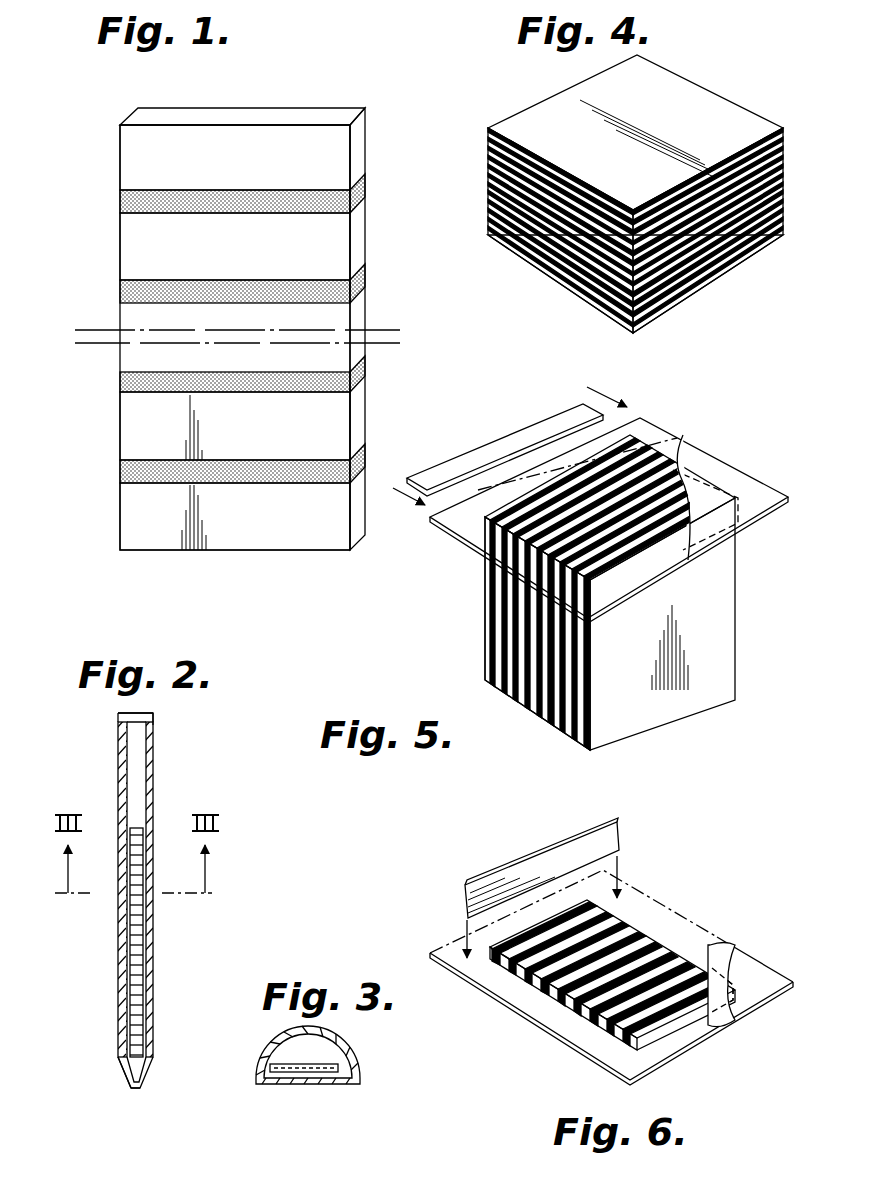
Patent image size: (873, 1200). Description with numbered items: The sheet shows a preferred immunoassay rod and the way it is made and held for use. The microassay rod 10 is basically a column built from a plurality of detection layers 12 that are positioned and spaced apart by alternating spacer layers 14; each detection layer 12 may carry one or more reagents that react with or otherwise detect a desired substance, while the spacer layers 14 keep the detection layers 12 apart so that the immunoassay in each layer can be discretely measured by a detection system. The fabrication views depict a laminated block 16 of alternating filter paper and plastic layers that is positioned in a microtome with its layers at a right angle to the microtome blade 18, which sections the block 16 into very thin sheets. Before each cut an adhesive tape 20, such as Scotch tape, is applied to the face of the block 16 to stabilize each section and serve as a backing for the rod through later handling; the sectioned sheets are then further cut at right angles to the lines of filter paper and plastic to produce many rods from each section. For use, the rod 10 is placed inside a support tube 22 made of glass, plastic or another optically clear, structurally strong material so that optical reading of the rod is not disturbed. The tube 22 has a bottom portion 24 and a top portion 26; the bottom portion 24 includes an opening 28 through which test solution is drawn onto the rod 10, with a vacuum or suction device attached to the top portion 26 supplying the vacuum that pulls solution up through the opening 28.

In FIG. 1, the microassay rod 10 is at (294, 104).
In FIG. 2, the microassay rod 10 is at (137, 825).
In FIG. 3, the microassay rod 10 is at (306, 1062).
In FIG. 6, the microassay rod 10 is at (612, 975).
In FIG. 4, the detection layers 12 is at (735, 232).
In FIG. 5, the detection layers 12 is at (582, 735).
In FIG. 4, the spacer layers 14 is at (540, 226).
In FIG. 5, the spacer layers 14 is at (505, 672).
In FIG. 4, the laminated block 16 is at (568, 108).
In FIG. 5, the laminated block 16 is at (688, 650).
In FIG. 5, the microtome blade 18 is at (527, 437).
In FIG. 6, the microtome blade 18 is at (505, 875).
In FIG. 5, the adhesive tape 20 is at (738, 480).
In FIG. 6, the adhesive tape 20 is at (753, 990).
In FIG. 2, the support tube 22 is at (118, 783).
In FIG. 3, the support tube 22 is at (291, 1086).
In FIG. 2, the bottom portion 24 is at (118, 1063).
In FIG. 2, the top portion 26 is at (155, 728).
In FIG. 2, the opening 28 is at (131, 1090).